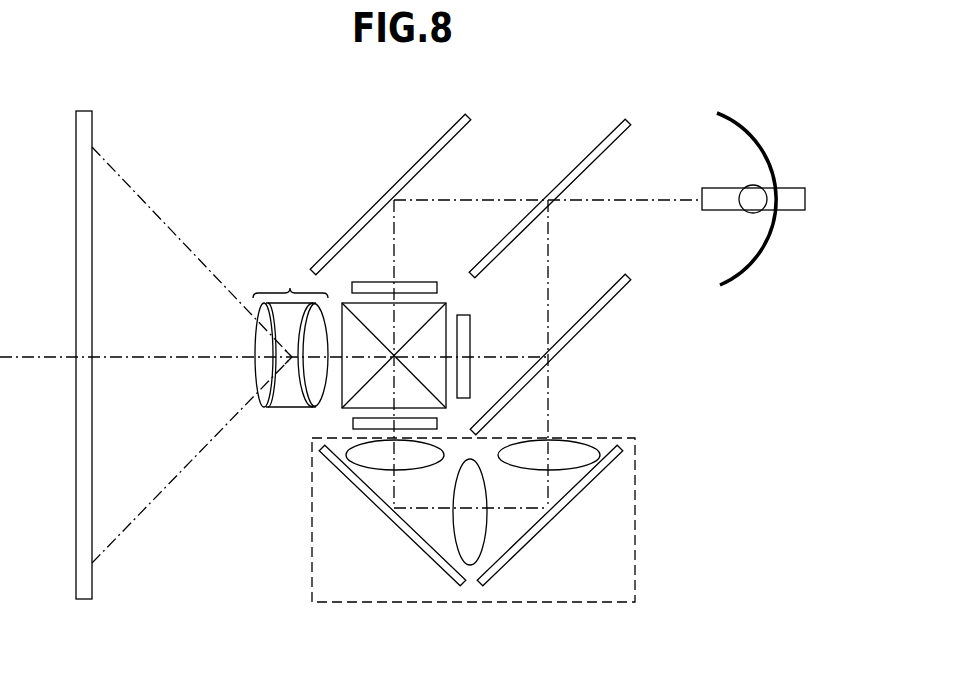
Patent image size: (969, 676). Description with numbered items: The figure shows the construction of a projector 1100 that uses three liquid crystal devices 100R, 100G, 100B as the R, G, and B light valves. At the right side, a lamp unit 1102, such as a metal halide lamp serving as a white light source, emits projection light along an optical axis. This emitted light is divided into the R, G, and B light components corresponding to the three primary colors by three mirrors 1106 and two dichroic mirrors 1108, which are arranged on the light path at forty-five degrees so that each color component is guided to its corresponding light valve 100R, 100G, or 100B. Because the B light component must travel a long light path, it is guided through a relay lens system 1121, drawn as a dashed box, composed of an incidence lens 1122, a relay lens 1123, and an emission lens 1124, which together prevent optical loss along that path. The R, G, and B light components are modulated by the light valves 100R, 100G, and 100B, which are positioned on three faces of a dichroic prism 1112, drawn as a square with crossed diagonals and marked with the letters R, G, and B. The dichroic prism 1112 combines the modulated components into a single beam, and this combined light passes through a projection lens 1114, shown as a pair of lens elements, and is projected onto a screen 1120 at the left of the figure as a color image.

The projector 1100 is at (660, 108).
The lamp unit 1102 is at (757, 262).
The mirrors 1106 is at (423, 160).
The dichroic mirrors 1108 is at (578, 163).
The dichroic prism 1112 is at (347, 303).
The projection lens 1114 is at (290, 287).
The screen 1120 is at (92, 127).
The relay lens system 1121 is at (635, 571).
The incidence lens 1122 is at (575, 455).
The relay lens 1123 is at (484, 534).
The emission lens 1124 is at (363, 455).
The liquid crystal device 100R is at (423, 282).
The liquid crystal device 100G is at (472, 340).
The liquid crystal device 100B is at (353, 425).